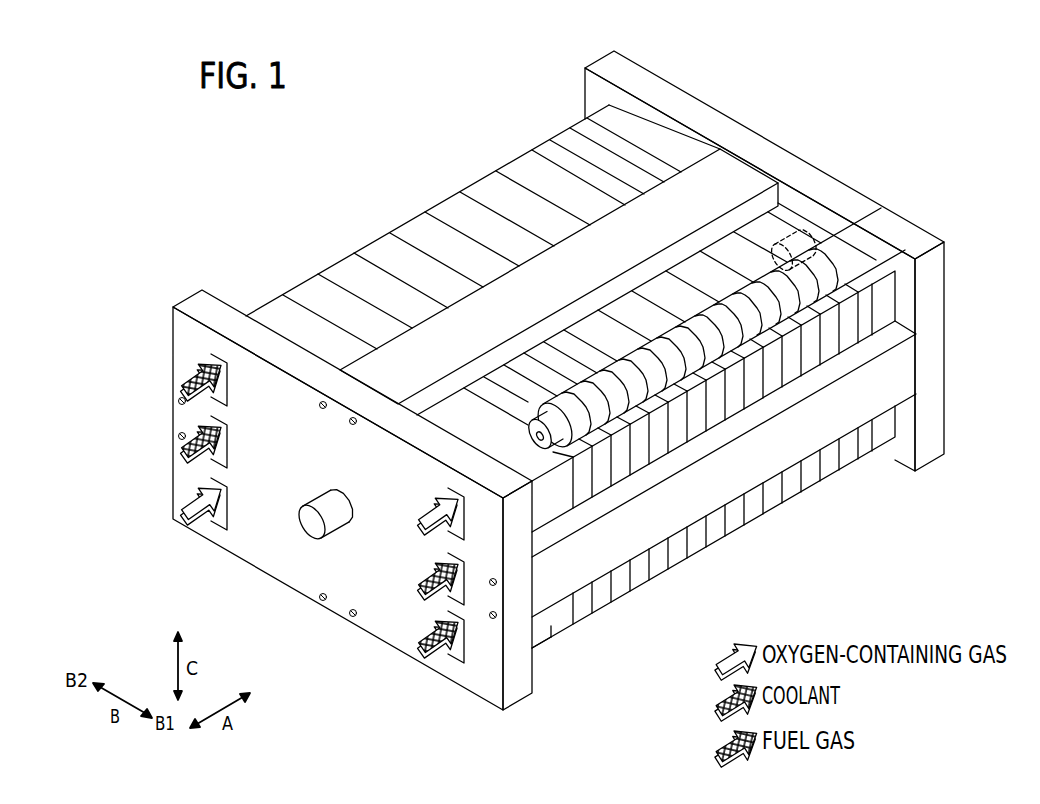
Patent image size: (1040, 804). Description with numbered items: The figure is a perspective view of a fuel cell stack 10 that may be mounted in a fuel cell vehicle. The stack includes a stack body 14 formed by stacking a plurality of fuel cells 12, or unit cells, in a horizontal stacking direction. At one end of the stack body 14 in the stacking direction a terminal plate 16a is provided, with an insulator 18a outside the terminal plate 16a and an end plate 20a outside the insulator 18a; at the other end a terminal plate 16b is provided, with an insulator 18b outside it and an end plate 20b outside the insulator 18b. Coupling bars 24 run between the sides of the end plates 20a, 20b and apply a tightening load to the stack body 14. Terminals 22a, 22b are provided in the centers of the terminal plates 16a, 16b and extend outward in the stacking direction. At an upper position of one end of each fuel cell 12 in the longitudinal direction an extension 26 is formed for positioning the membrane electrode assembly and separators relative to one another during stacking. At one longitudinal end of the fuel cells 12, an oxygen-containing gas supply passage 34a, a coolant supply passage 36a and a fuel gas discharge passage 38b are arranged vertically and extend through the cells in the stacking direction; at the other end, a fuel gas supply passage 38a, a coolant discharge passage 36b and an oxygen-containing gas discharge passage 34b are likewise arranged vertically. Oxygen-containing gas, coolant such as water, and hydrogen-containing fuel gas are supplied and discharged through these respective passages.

The fuel cell stack 10 is at (275, 157).
The fuel cell 12 is at (463, 187).
The stack body 14 is at (419, 136).
The terminal plate 16a is at (545, 511).
The terminal plate 16b is at (643, 152).
The insulator 18a is at (552, 627).
The insulator 18b is at (625, 130).
The end plate 20a is at (203, 286).
The end plate 20b is at (923, 221).
The terminal 22a is at (297, 516).
The terminal 22b is at (806, 244).
The coupling bar 24 is at (742, 177).
The extension 26 is at (701, 365).
The oxygen-containing gas supply passage 34a is at (440, 498).
The oxygen-containing gas discharge passage 34b is at (212, 485).
The coolant supply passage 36a is at (450, 597).
The coolant discharge passage 36b is at (214, 437).
The fuel gas supply passage 38a is at (222, 366).
The fuel gas discharge passage 38b is at (455, 660).